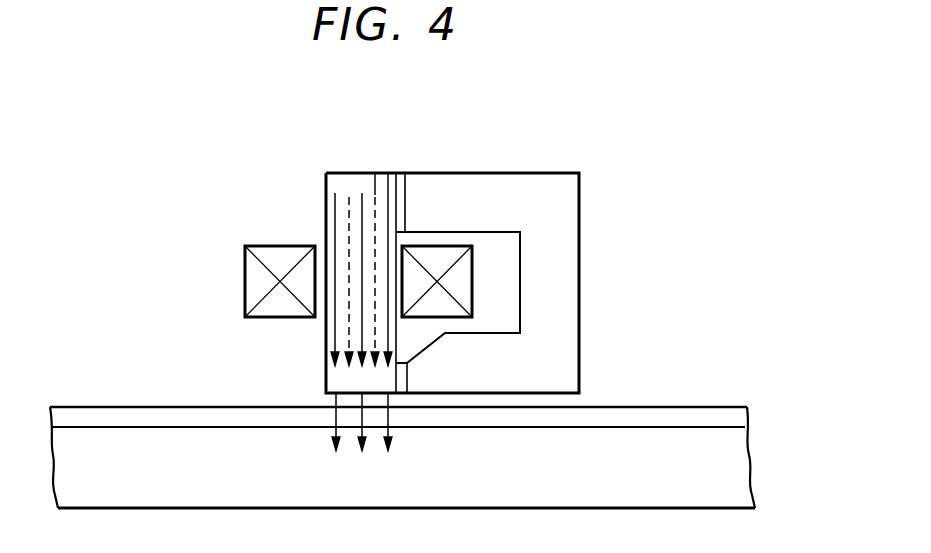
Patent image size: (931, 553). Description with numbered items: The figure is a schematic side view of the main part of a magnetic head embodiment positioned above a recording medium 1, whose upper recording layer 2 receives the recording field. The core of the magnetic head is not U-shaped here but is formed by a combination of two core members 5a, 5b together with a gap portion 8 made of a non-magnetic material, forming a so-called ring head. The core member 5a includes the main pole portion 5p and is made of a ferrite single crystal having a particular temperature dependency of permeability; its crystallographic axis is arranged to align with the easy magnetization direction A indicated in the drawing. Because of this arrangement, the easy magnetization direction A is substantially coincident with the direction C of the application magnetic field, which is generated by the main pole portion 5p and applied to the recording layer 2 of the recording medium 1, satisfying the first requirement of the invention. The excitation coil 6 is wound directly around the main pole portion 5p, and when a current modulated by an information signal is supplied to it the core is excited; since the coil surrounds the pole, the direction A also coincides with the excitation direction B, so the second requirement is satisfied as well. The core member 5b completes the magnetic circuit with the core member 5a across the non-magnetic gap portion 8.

The recording medium 1 is at (783, 395).
The recording layer 2 is at (692, 428).
The core member 5a is at (345, 180).
The core member 5b is at (563, 257).
The main pole portion 5p is at (342, 332).
The excitation coil 6 is at (270, 255).
The gap portion 8 is at (403, 383).
The easy magnetization direction A is at (388, 173).
The excitation direction B is at (375, 173).
The direction of the application magnetic field C is at (335, 420).